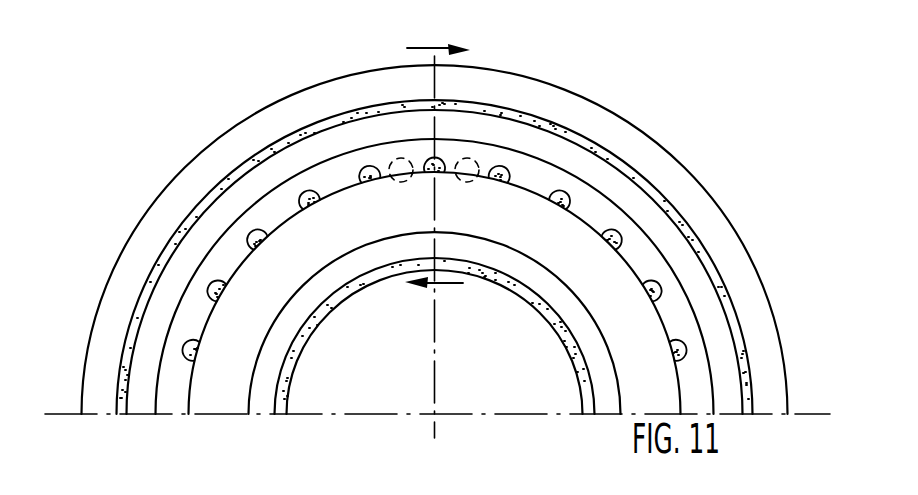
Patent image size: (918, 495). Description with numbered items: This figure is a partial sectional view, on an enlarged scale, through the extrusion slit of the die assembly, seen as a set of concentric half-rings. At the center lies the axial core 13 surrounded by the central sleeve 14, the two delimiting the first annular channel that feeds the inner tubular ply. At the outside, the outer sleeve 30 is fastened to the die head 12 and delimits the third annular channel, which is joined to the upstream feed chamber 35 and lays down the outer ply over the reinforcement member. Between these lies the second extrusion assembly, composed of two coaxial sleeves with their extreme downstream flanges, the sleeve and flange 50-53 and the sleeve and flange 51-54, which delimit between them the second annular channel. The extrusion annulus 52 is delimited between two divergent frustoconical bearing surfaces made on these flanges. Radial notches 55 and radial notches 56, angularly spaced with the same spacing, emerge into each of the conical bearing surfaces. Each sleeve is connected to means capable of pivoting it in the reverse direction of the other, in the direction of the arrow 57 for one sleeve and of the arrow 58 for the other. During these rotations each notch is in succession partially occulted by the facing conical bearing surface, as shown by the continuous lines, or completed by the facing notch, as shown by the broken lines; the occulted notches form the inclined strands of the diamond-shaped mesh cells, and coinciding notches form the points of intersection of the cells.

The die head 12 is at (722, 235).
The axial core 13 is at (508, 378).
The central sleeve 14 is at (587, 332).
The outer sleeve 30 is at (497, 130).
The upstream feed chamber 35 is at (722, 280).
The sleeve and downstream flange 50-53 is at (495, 167).
The sleeve and downstream flange 51-54 is at (303, 235).
The extrusion annulus 52 is at (587, 220).
The radial notch 55 is at (585, 187).
The radial notch 56 is at (497, 189).
The arrow 57 is at (432, 48).
The arrow 58 is at (443, 283).